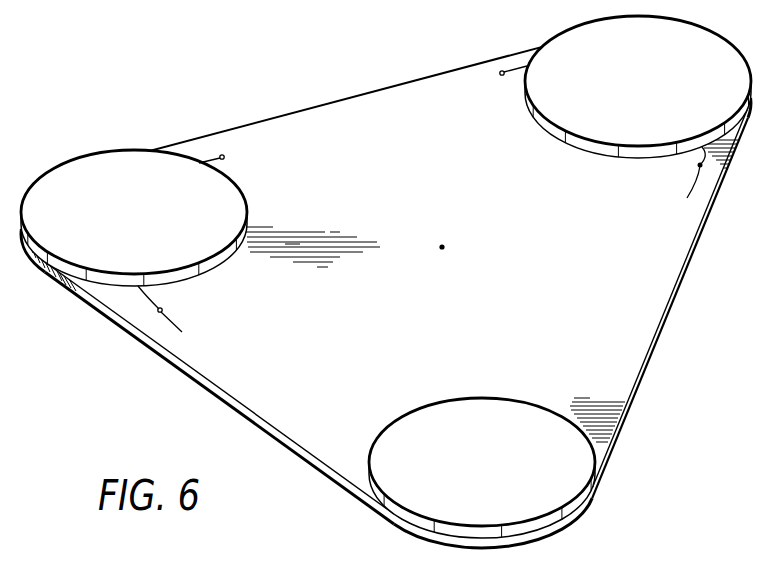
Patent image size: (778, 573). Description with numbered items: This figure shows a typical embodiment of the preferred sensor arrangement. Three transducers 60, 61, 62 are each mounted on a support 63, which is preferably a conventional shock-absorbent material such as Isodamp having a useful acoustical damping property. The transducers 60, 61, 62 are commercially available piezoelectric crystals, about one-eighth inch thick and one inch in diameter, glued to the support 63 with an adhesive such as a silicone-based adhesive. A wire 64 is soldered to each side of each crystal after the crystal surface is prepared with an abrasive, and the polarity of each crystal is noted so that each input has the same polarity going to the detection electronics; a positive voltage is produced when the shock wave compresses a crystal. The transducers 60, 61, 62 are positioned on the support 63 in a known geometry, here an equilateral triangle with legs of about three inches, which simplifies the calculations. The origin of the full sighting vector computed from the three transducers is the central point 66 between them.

The transducer 60 is at (630, 111).
The transducer 61 is at (211, 219).
The transducer 62 is at (448, 467).
The support 63 is at (354, 94).
The wire 64 is at (225, 156).
The central point 66 is at (443, 247).